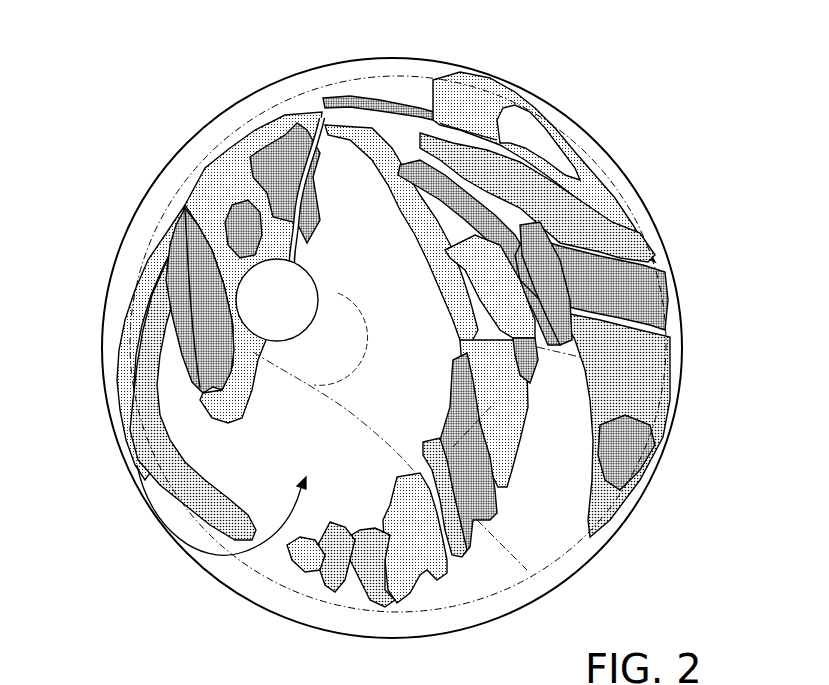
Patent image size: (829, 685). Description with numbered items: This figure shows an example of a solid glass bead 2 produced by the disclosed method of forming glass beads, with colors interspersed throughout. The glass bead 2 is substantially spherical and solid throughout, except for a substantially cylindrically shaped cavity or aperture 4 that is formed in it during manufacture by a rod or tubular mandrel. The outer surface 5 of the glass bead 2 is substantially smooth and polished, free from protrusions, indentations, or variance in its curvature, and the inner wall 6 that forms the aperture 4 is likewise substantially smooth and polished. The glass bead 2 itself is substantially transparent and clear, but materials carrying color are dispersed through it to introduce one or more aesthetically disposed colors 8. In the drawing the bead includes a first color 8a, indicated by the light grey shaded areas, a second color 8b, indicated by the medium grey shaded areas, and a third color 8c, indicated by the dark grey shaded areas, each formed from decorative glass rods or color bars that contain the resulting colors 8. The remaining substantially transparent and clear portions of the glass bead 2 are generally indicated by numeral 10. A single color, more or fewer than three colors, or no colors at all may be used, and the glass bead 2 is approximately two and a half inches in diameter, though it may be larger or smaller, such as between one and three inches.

The glass bead 2 is at (633, 82).
The aperture 4 is at (264, 306).
The outer surface 5 is at (130, 222).
The inner wall 6 is at (313, 283).
The colors 8 is at (595, 201).
The first color 8a is at (615, 212).
The second color 8b is at (615, 242).
The third color 8c is at (620, 282).
The substantially transparent and clear portions 10 is at (383, 576).